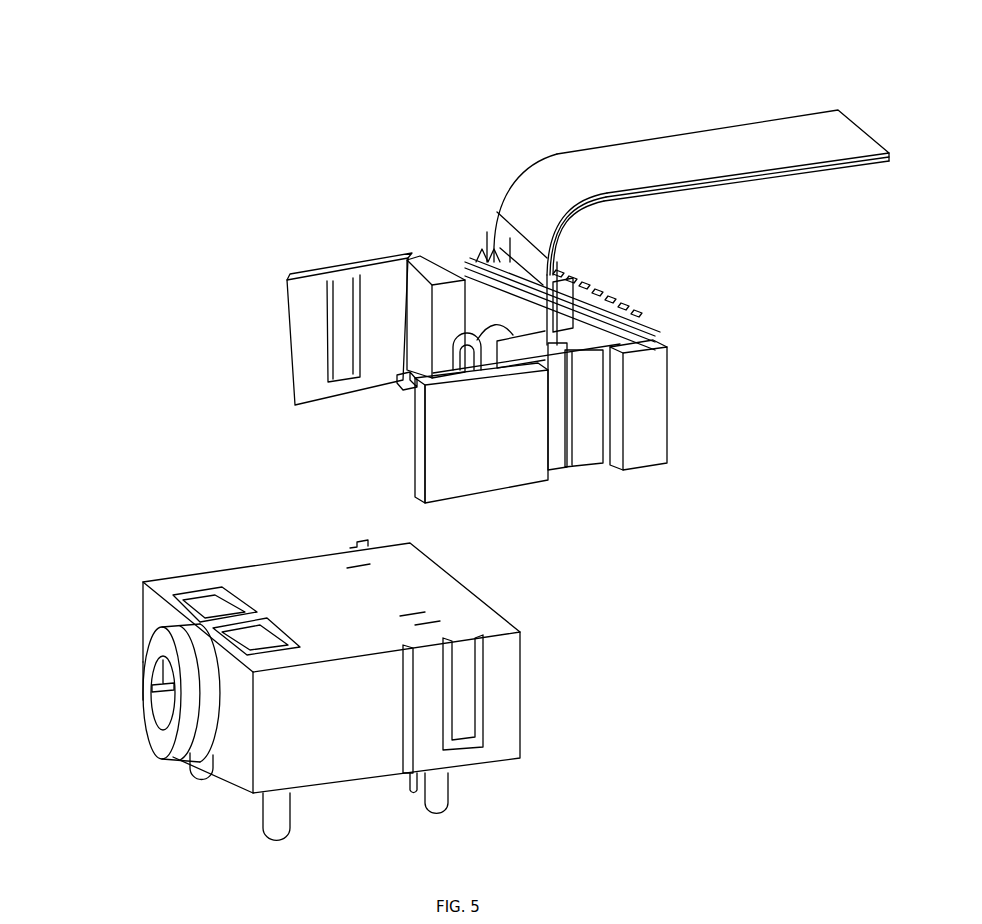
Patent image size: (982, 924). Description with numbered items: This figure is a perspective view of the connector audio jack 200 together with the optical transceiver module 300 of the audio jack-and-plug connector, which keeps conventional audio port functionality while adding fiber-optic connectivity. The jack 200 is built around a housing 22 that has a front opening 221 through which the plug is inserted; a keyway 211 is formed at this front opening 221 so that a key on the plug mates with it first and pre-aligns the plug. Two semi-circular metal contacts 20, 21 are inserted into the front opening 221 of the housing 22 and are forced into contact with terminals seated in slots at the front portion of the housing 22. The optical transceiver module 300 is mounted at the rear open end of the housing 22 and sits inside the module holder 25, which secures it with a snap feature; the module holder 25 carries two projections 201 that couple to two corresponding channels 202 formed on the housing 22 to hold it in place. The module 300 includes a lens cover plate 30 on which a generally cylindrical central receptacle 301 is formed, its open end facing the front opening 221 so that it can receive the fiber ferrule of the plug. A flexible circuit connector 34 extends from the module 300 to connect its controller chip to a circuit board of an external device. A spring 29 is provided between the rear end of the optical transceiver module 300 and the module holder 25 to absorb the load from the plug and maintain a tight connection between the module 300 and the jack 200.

The optical transceiver module 300 is at (308, 138).
The flexible circuit connector 34 is at (777, 120).
The lens cover plate 30 is at (483, 250).
The central receptacle 301 is at (444, 326).
The projections 201 is at (331, 336).
The spring 29 is at (607, 323).
The module holder 25 is at (668, 412).
The connector audio jack 200 is at (132, 545).
The housing 22 is at (227, 558).
The channels 202 is at (335, 537).
The semi-circular metal contact 21 is at (135, 649).
The keyway 211 is at (141, 680).
The front opening 221 is at (156, 713).
The semi-circular metal contact 20 is at (180, 757).